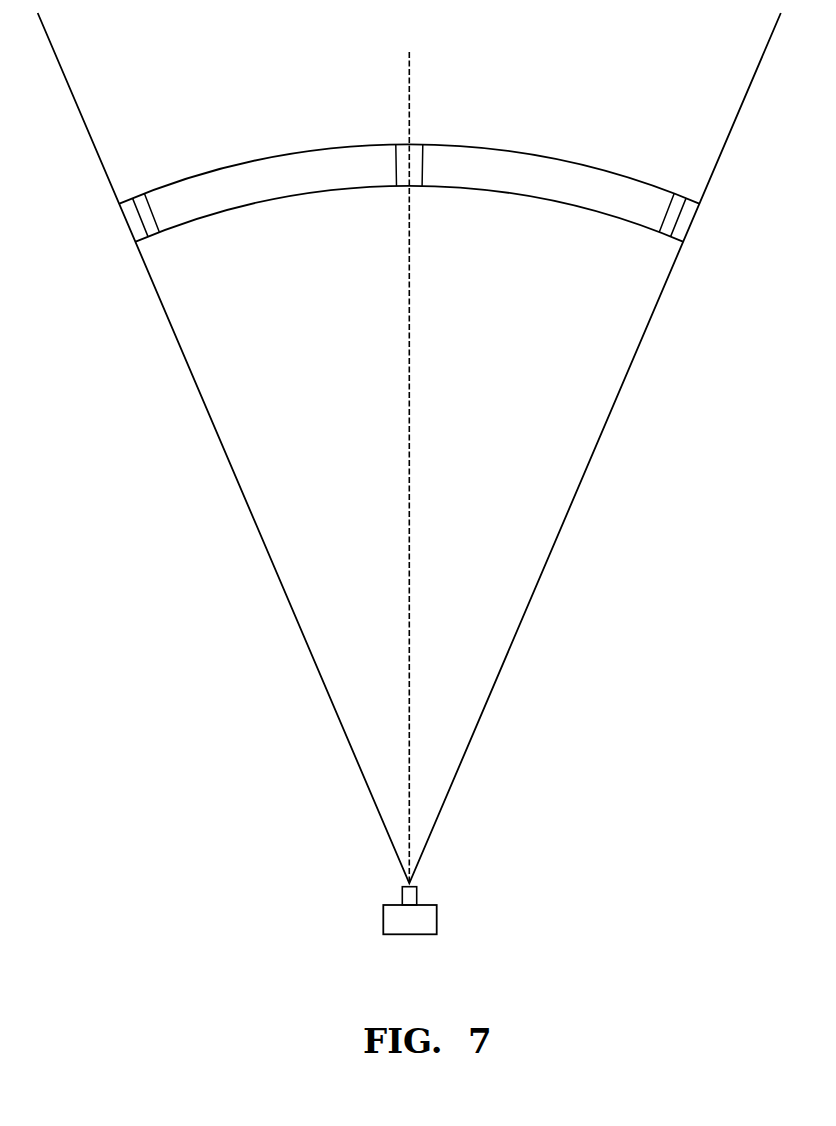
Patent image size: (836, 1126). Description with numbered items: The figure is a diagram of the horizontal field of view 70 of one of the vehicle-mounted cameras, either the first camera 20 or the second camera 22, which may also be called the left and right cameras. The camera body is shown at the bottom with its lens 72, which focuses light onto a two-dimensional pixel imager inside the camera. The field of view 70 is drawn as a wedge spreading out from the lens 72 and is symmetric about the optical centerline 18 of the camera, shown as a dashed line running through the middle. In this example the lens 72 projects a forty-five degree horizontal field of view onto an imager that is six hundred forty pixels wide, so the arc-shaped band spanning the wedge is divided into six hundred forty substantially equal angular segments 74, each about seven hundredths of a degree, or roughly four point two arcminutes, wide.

The horizontal field of view 70 is at (538, 483).
The optical centerline 18 is at (409, 602).
The angular segments 74 is at (155, 223).
The lens 72 is at (417, 893).
The first camera 20 is at (464, 942).
The second camera 22 is at (420, 928).